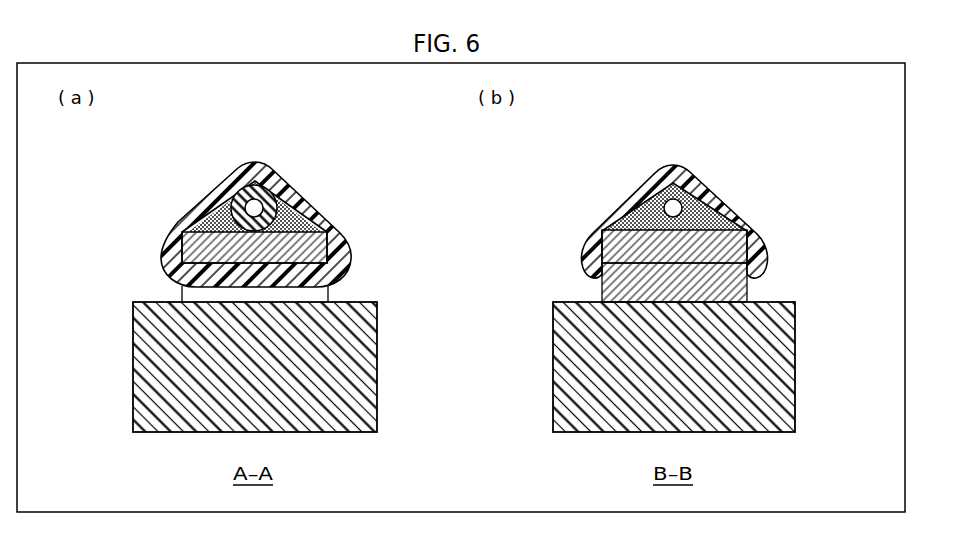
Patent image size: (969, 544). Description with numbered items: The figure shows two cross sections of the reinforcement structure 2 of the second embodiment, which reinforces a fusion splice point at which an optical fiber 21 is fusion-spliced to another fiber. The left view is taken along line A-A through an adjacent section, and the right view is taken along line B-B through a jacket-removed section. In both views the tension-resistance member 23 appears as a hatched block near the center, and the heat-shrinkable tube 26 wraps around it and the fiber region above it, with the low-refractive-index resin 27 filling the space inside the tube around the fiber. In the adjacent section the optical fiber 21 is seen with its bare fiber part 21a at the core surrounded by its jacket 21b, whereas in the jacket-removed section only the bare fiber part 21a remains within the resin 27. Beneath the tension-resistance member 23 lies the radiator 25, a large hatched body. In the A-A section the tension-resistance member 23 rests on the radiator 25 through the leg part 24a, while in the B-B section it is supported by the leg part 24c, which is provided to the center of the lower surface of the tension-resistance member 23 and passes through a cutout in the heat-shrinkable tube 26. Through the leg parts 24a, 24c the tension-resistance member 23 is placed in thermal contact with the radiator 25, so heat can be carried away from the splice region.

The reinforcement structure 2 is at (401, 151).
The optical fiber 21 is at (390, 208).
The bare fiber part 21a is at (245, 207).
The jacket 21b is at (272, 204).
The tension-resistance member 23 is at (340, 245).
The leg part 24a is at (180, 285).
The leg part 24c is at (600, 285).
The radiator 25 is at (377, 365).
The heat-shrinkable tube 26 is at (297, 193).
The low-refractive-index resin 27 is at (323, 222).